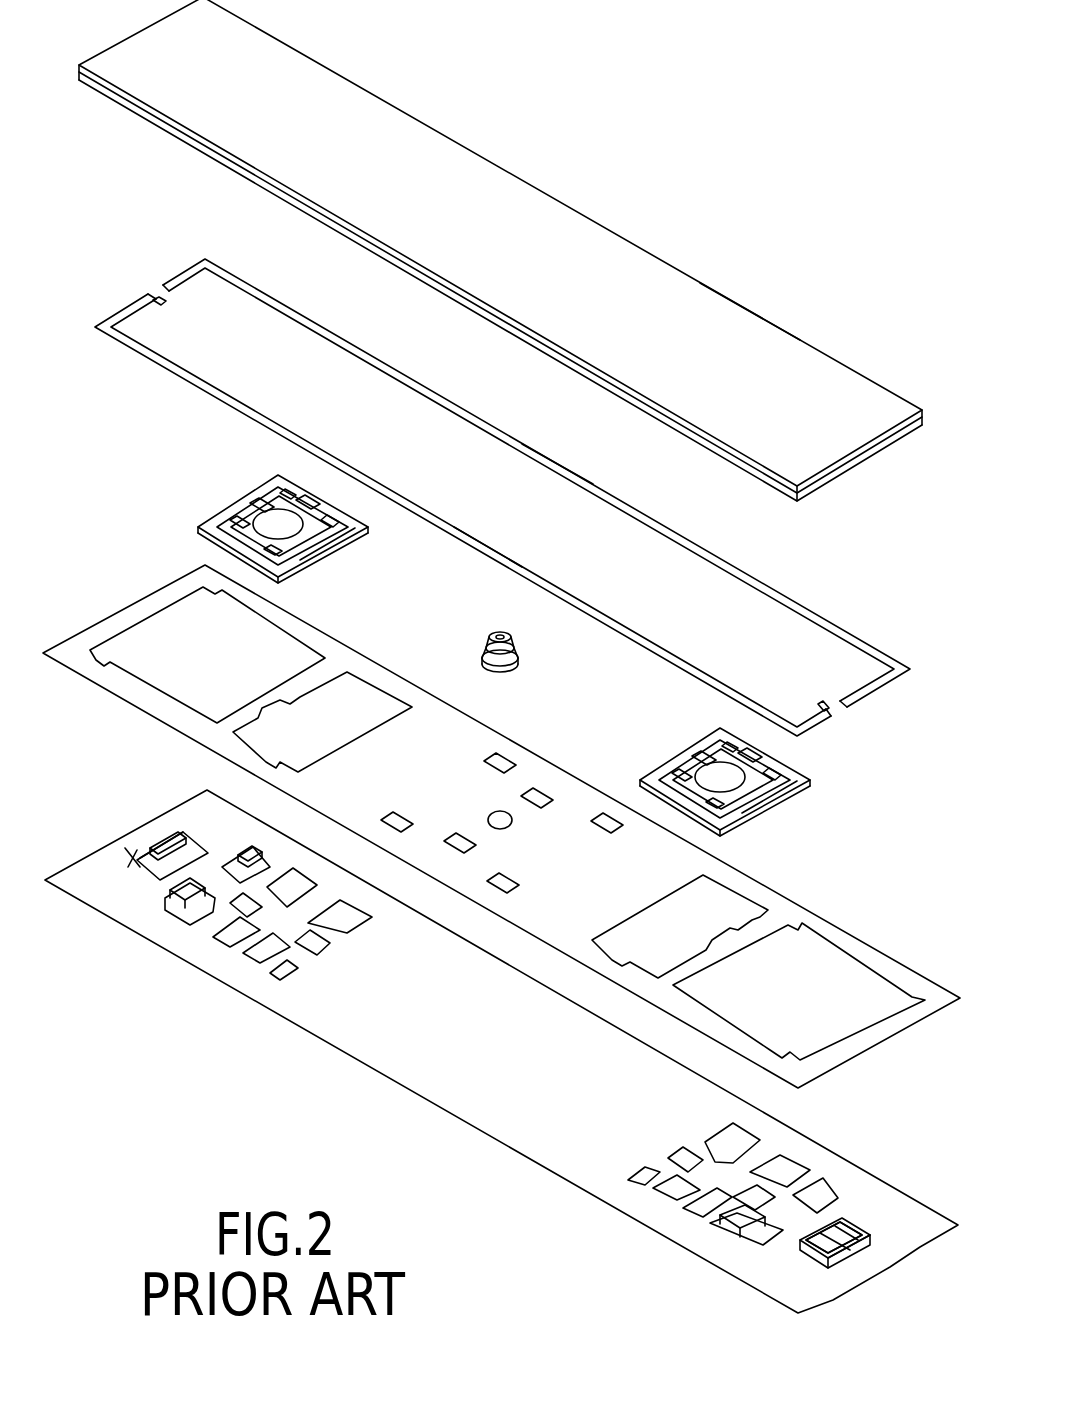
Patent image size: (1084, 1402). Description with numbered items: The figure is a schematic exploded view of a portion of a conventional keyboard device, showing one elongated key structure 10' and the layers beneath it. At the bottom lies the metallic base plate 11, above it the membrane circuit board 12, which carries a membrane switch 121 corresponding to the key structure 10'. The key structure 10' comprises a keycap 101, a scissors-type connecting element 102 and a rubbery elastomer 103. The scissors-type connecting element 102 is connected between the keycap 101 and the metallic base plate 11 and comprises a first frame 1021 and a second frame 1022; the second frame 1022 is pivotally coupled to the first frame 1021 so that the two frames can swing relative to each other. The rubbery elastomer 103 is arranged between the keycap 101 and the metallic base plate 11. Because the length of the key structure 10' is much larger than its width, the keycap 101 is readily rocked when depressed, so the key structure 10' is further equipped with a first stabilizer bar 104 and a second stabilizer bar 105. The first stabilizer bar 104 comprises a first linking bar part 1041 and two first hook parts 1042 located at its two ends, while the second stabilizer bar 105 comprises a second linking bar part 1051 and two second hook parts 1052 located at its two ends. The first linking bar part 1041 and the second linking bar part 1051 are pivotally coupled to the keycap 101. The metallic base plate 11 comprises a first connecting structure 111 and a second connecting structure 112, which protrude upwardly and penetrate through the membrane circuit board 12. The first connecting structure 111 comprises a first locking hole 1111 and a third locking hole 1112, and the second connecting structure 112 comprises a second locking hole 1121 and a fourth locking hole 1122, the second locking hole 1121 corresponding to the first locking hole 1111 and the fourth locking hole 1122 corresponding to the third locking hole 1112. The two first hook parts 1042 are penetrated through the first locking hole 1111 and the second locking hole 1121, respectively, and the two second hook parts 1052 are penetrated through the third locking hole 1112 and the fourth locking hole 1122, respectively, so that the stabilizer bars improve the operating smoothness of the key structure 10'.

The key structure 10' is at (786, 303).
The keycap 101 is at (597, 246).
The scissors-type connecting element 102 is at (261, 476).
The first frame 1021 is at (336, 537).
The second frame 1022 is at (252, 504).
The rubbery elastomer 103 is at (520, 655).
The first stabilizer bar 104 is at (616, 619).
The first linking bar part 1041 is at (481, 558).
The first hook parts 1042 is at (158, 300).
The second stabilizer bar 105 is at (791, 597).
The second linking bar part 1051 is at (556, 456).
The second hook parts 1052 is at (178, 312).
The metallic base plate 11 is at (363, 1036).
The first connecting structure 111 is at (806, 1256).
The first locking hole 1111 is at (846, 1250).
The third locking hole 1112 is at (865, 1230).
The second connecting structure 112 is at (127, 849).
The second locking hole 1121 is at (152, 844).
The fourth locking hole 1122 is at (162, 834).
The membrane circuit board 12 is at (448, 731).
The membrane switch 121 is at (494, 812).